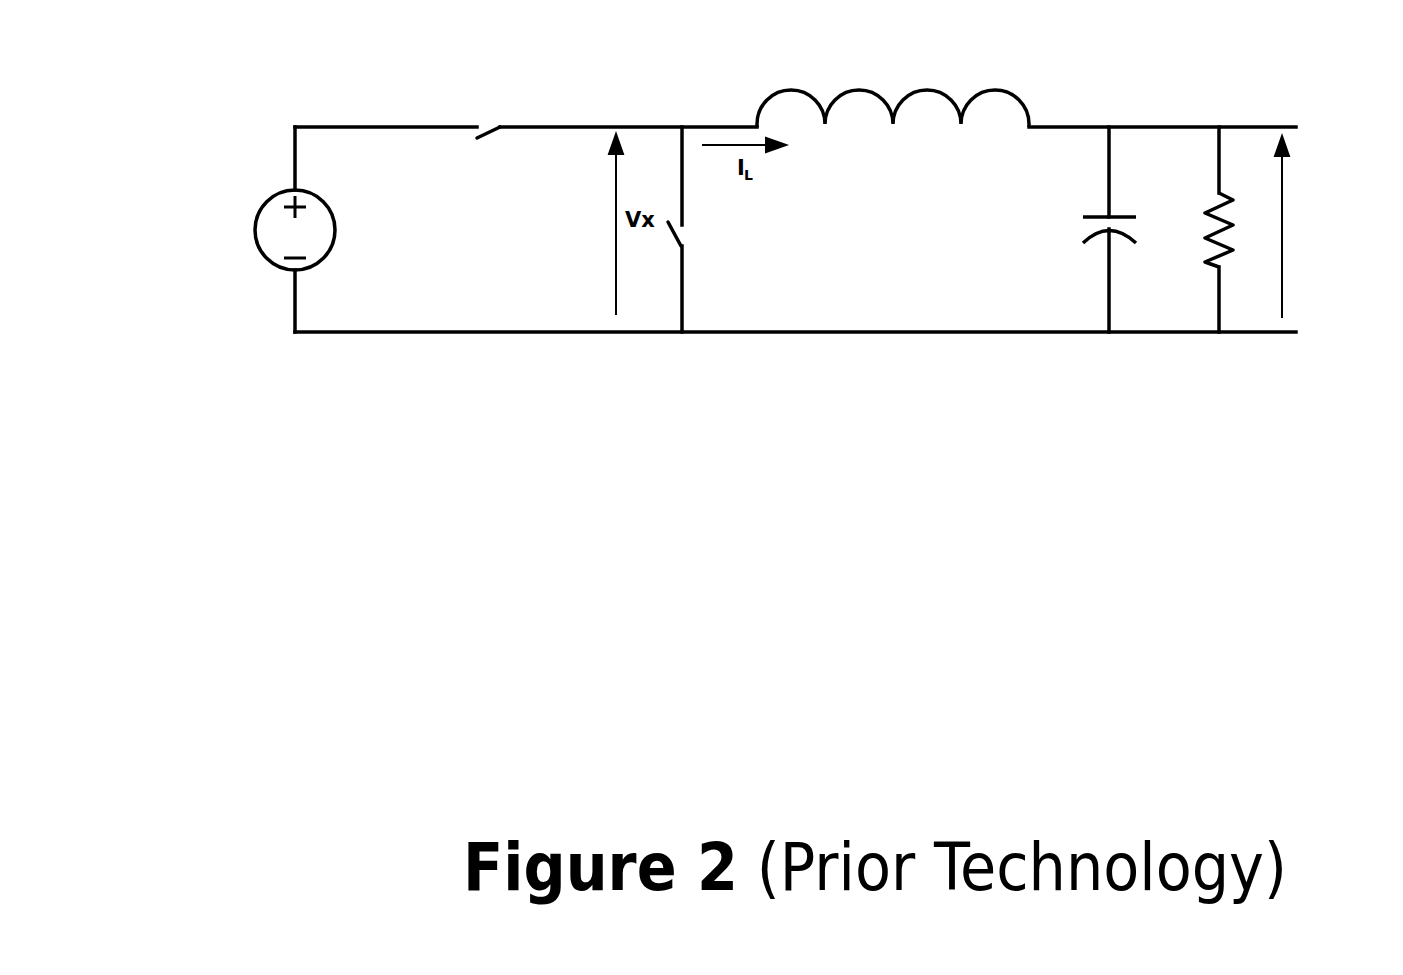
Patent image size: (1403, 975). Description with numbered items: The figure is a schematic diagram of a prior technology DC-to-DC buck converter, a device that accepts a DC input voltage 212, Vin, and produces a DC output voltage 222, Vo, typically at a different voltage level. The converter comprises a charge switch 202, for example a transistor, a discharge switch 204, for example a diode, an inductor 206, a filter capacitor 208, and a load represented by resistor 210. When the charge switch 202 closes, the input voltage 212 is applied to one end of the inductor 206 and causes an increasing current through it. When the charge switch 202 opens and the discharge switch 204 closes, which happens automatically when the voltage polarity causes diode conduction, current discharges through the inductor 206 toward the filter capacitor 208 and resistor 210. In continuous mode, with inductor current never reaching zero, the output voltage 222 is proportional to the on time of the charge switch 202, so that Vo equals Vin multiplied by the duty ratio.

The charge switch 202 is at (487, 136).
The discharge switch 204 is at (688, 243).
The inductor 206 is at (873, 87).
The filter capacitor 208 is at (1080, 233).
The resistor 210 is at (1207, 238).
The input voltage 212 is at (265, 257).
The output voltage 222 is at (1400, 237).